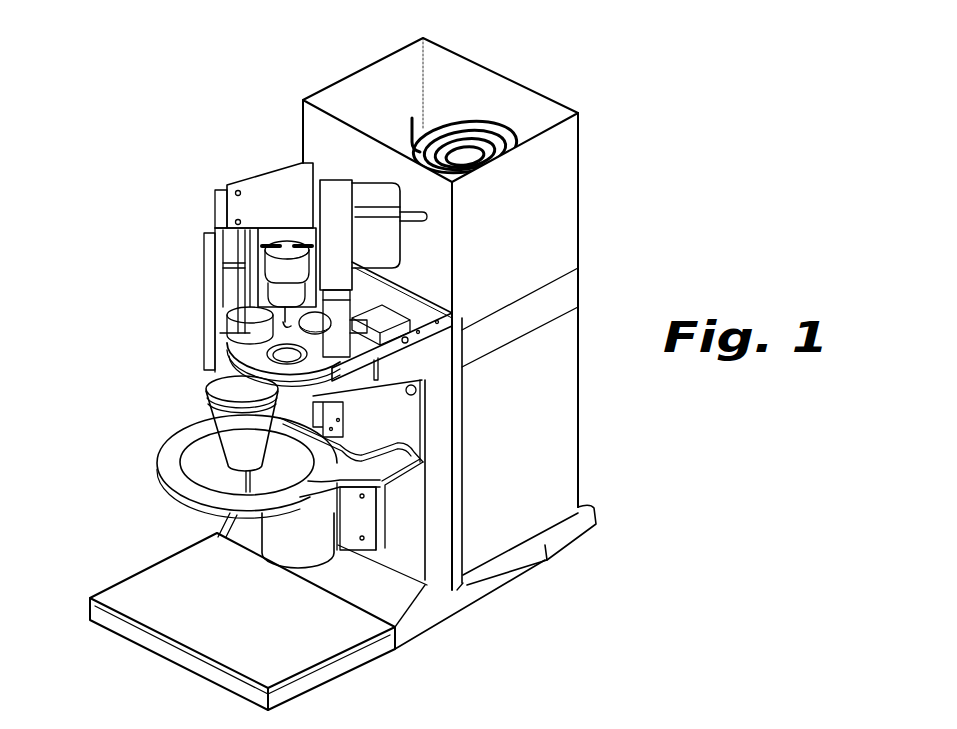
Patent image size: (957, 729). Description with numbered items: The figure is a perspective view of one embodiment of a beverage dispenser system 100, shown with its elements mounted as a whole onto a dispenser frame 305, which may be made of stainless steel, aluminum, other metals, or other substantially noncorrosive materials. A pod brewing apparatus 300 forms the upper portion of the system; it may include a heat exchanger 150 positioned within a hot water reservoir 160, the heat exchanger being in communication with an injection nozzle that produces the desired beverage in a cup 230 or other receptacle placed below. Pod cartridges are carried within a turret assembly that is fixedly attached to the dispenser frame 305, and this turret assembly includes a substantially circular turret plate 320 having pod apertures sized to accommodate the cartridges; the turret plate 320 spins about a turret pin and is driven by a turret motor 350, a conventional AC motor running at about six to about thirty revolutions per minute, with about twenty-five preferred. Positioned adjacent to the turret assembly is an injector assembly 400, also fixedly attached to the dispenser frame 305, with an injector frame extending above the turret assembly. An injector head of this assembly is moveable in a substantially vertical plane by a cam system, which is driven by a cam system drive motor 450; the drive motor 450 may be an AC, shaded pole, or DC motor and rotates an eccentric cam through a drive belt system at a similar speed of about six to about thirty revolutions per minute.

The beverage dispenser system 100 is at (144, 73).
The pod brewing apparatus 300 is at (356, 75).
The heat exchanger 150 is at (486, 118).
The hot water reservoir 160 is at (580, 112).
The cam system drive motor 450 is at (318, 180).
The turret motor 350 is at (277, 255).
The injector assembly 400 is at (238, 326).
The turret plate 320 is at (215, 366).
The dispenser frame 305 is at (445, 427).
The cup 230 is at (248, 442).